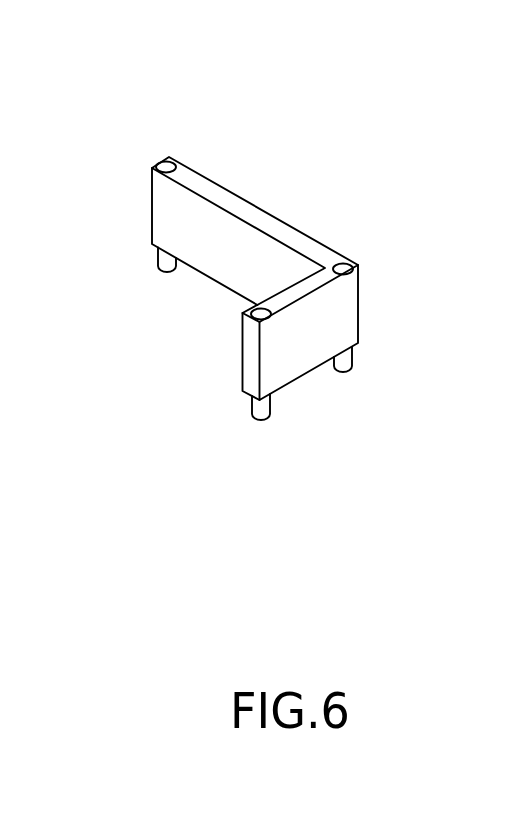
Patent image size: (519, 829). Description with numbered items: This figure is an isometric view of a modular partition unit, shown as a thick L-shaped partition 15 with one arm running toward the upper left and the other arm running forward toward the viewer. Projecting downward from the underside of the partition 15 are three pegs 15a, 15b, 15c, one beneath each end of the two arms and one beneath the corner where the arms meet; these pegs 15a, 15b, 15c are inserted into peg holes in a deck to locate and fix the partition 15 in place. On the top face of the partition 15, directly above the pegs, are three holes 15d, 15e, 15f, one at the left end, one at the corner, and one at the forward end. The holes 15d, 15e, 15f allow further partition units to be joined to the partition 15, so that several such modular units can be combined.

The partition 15 is at (245, 203).
The peg 15a is at (253, 418).
The peg 15b is at (352, 367).
The peg 15c is at (158, 272).
The hole 15d is at (172, 162).
The hole 15e is at (356, 262).
The hole 15f is at (257, 323).